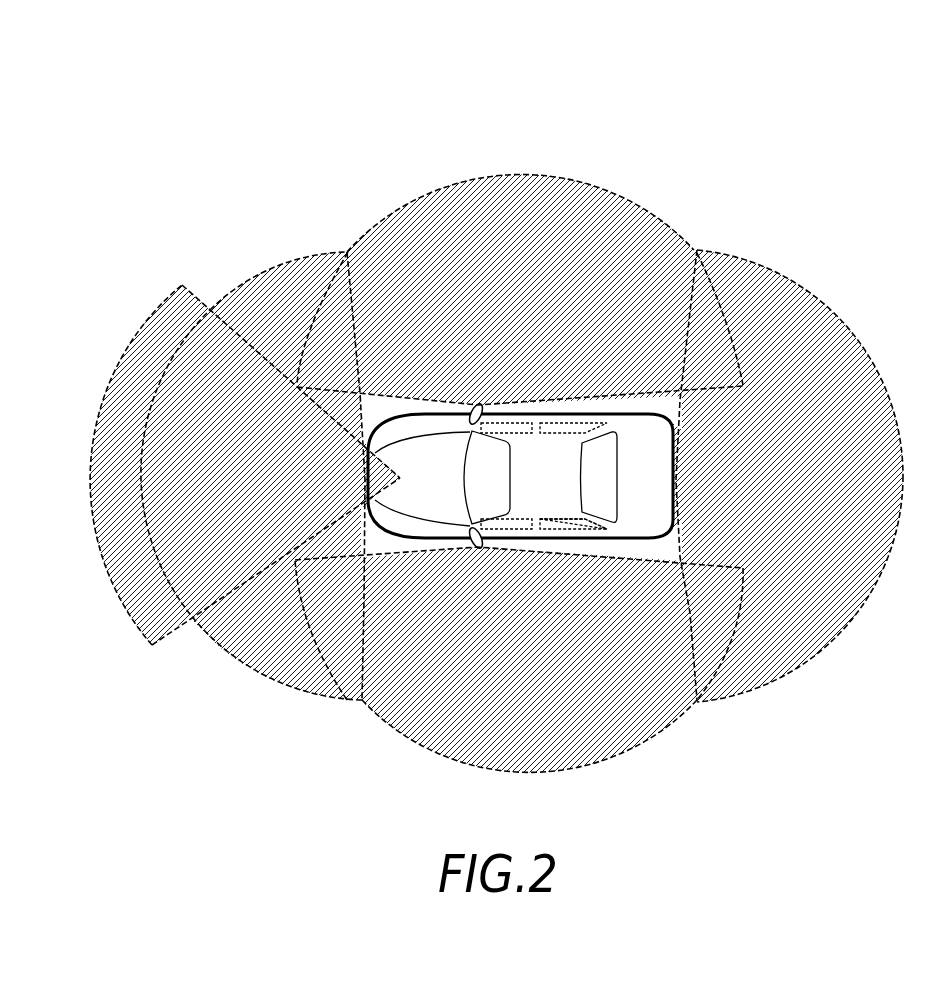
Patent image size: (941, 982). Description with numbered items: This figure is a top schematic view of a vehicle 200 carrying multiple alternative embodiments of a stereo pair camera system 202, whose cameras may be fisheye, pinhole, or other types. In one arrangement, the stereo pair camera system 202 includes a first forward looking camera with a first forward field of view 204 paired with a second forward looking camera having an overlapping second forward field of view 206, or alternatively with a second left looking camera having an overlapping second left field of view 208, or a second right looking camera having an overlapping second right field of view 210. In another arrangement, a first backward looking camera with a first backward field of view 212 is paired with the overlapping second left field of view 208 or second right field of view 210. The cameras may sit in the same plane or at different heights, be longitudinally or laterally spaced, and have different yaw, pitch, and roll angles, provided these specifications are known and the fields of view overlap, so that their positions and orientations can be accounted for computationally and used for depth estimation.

The vehicle 200 is at (573, 477).
The stereo pair camera system 202 is at (730, 207).
The first forward field of view 204 is at (263, 250).
The second forward field of view 206 is at (125, 315).
The second left field of view 208 is at (655, 747).
The second right field of view 210 is at (485, 157).
The first backward field of view 212 is at (833, 657).